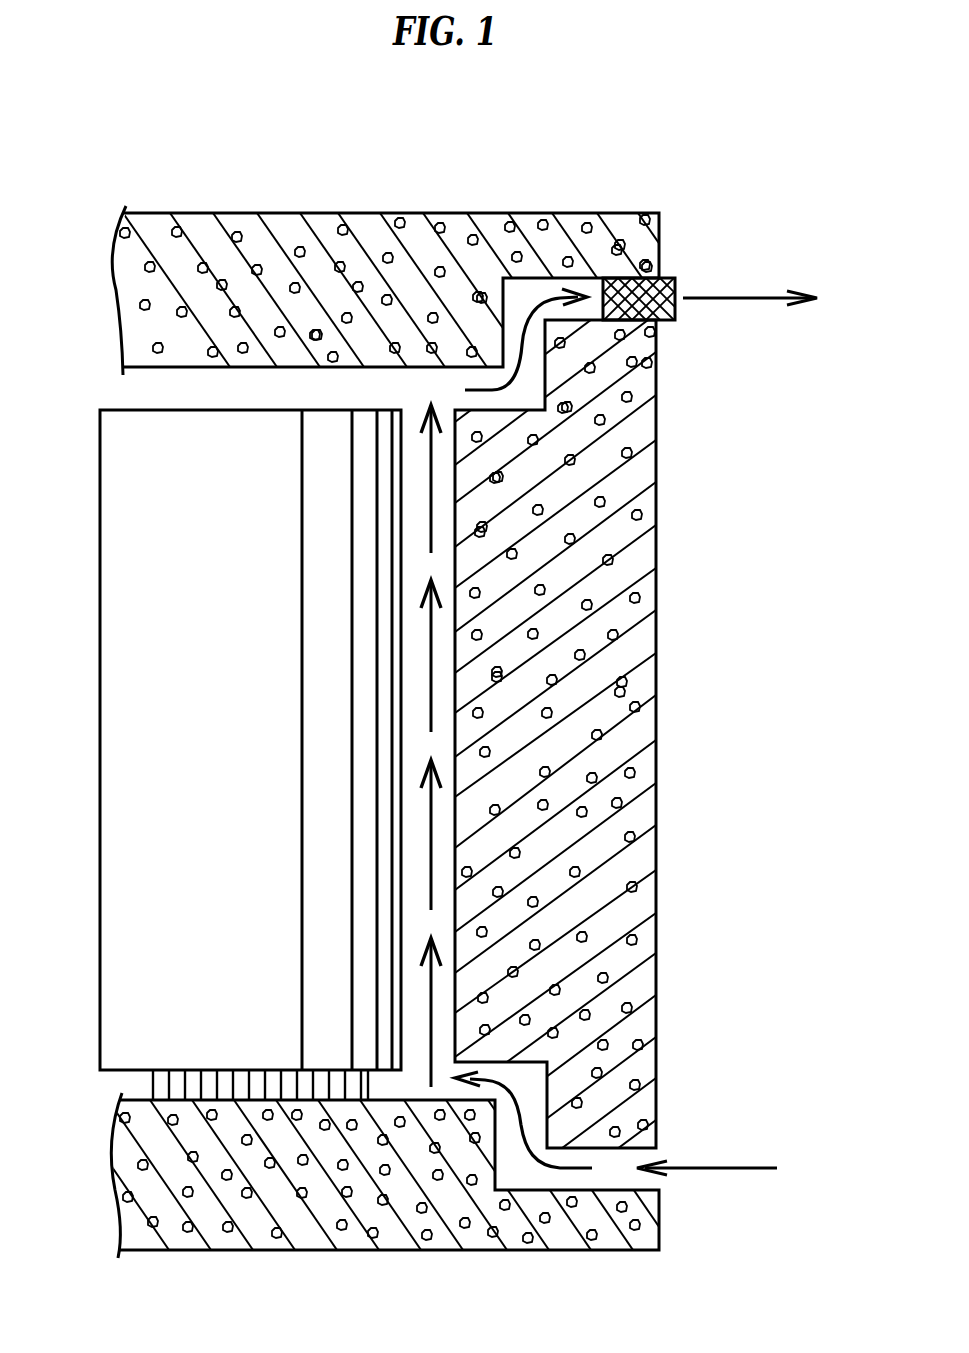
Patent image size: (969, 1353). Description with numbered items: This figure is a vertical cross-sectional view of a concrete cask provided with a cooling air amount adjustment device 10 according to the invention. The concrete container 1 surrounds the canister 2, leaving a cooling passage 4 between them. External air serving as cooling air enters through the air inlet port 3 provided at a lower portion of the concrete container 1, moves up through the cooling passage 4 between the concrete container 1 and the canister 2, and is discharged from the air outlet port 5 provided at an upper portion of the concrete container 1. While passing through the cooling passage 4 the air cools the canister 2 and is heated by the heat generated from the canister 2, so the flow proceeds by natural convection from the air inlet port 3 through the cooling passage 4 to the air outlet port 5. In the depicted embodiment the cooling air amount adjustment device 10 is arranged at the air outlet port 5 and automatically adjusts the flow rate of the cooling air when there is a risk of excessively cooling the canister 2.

The concrete container 1 is at (262, 228).
The canister 2 is at (113, 559).
The air inlet port 3 is at (602, 1168).
The cooling passage 4 is at (415, 1078).
The air outlet port 5 is at (593, 287).
The cooling air amount adjustment device 10 is at (672, 280).